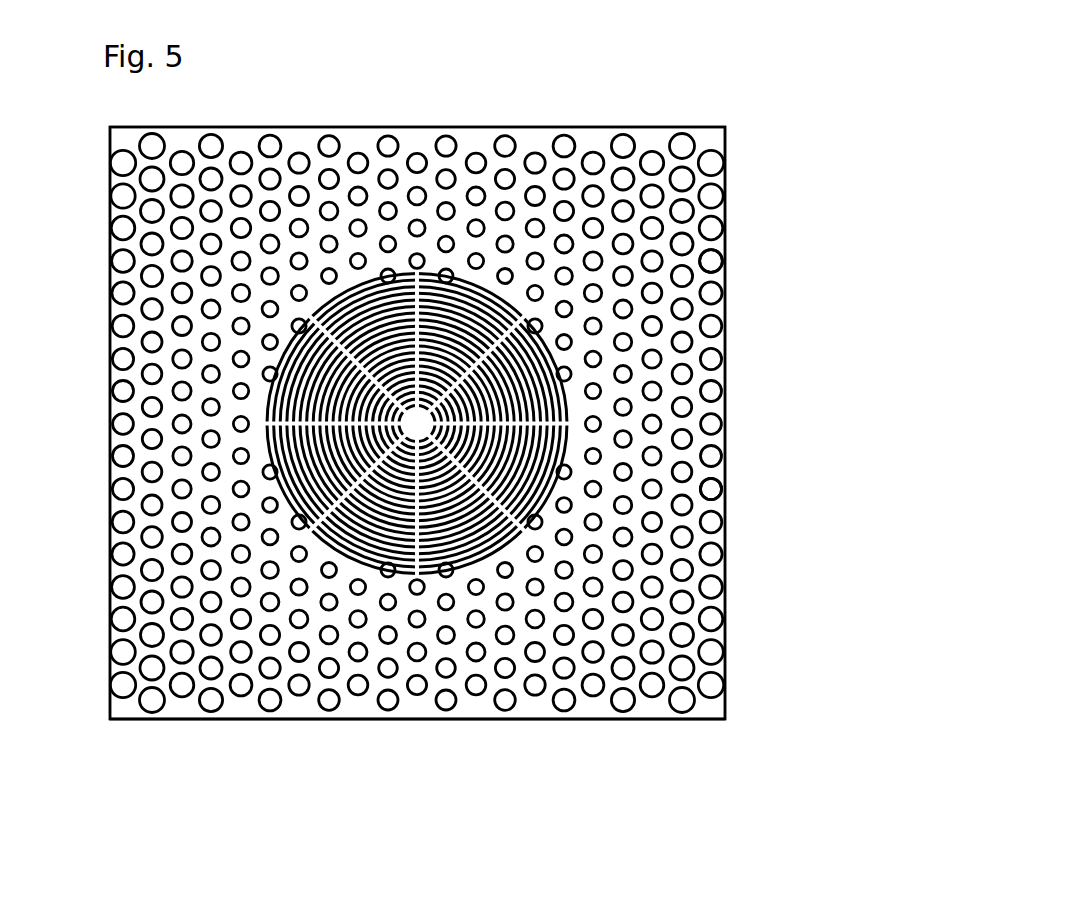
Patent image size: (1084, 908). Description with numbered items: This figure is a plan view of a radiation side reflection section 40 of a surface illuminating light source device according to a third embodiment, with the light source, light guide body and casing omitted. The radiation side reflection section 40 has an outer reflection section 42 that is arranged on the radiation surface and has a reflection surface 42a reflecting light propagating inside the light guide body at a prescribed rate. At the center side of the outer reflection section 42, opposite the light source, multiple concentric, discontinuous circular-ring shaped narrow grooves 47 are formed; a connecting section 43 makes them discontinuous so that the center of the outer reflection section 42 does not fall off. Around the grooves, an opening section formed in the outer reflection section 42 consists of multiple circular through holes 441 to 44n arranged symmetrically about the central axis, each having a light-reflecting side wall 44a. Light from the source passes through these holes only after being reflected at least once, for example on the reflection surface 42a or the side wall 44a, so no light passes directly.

The radiation side reflection section 40 is at (855, 150).
The outer reflection section 42 is at (658, 467).
The reflection surface 42a is at (642, 722).
The connecting section 43 is at (570, 418).
The circular hole 441 is at (505, 275).
The circular hole 44n is at (722, 258).
The side wall 44a is at (710, 487).
The circular-ring shaped narrow groove 47 is at (557, 353).